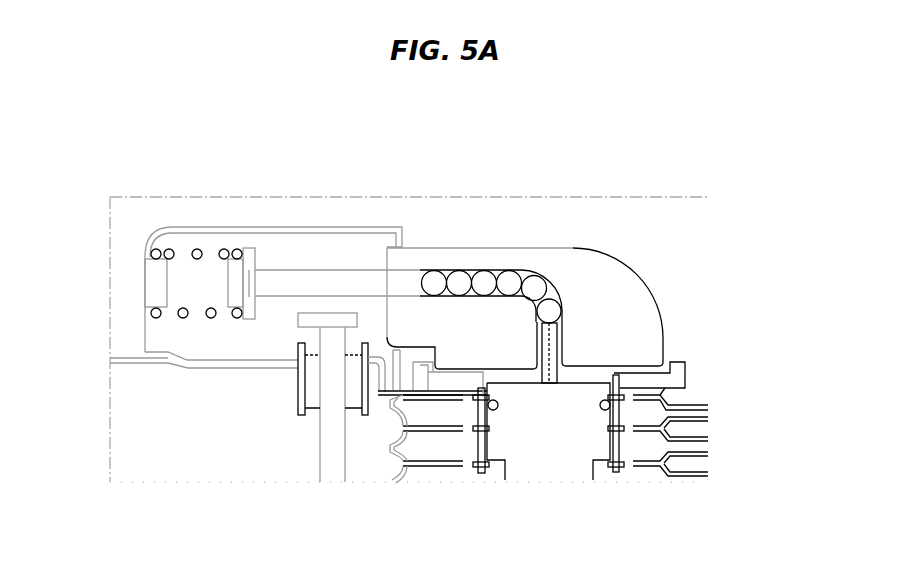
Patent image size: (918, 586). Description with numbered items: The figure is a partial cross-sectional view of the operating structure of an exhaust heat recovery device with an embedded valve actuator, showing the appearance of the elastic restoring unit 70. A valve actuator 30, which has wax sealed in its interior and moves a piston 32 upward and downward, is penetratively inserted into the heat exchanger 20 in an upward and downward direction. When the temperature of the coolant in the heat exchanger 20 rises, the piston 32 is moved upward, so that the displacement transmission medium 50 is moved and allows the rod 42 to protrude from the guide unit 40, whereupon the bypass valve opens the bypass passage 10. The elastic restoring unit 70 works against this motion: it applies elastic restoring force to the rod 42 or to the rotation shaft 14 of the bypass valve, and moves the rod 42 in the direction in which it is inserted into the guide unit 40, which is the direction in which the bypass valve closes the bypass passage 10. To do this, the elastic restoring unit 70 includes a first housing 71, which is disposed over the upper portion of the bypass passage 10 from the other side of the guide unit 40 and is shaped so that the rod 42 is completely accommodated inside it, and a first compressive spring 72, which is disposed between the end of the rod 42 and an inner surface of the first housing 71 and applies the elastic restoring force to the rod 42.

The bypass passage 10 is at (197, 433).
The rotation shaft 14 is at (335, 440).
The heat exchanger 20 is at (687, 434).
The valve actuator 30 is at (550, 437).
The piston 32 is at (548, 344).
The guide unit 40 is at (602, 275).
The rod 42 is at (350, 285).
The displacement transmission medium 50 is at (483, 280).
The elastic restoring unit 70 is at (193, 125).
The first housing 71 is at (235, 228).
The first compressive spring 72 is at (196, 249).